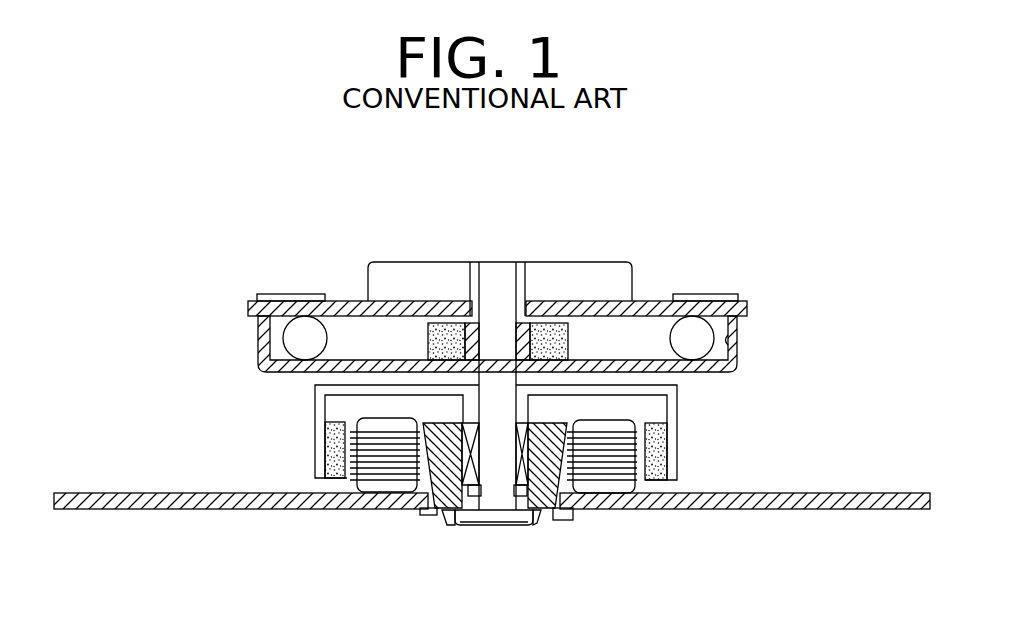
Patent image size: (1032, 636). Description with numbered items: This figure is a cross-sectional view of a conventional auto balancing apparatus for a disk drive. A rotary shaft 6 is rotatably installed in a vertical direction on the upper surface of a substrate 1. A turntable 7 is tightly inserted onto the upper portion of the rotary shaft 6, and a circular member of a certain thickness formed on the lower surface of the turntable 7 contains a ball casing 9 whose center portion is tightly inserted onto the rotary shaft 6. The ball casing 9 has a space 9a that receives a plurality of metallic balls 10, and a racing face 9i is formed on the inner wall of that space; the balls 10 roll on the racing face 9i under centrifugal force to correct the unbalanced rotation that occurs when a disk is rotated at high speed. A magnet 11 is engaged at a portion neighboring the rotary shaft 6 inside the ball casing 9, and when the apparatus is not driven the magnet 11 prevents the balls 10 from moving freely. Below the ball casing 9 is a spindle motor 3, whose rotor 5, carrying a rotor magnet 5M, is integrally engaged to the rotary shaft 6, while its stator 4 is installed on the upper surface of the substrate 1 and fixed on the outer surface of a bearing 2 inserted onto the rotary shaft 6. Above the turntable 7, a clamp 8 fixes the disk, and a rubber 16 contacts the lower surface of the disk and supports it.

The substrate 1 is at (112, 492).
The bearing 2 is at (568, 503).
The spindle motor 3 is at (708, 429).
The stator 4 is at (384, 483).
The rotor 5 is at (322, 432).
The magnet of the rotor 5M is at (333, 467).
The rotary shaft 6 is at (503, 270).
The turntable 7 is at (257, 302).
The clamp 8 is at (443, 267).
The ball casing 9 is at (266, 365).
The space 9a is at (340, 327).
The racing face 9i is at (737, 330).
The balls 10 is at (262, 336).
The magnet 11 is at (437, 335).
The rubber 16 is at (713, 296).